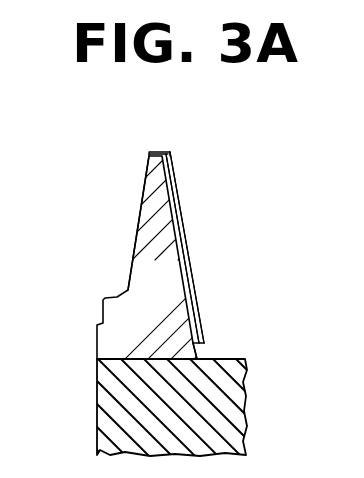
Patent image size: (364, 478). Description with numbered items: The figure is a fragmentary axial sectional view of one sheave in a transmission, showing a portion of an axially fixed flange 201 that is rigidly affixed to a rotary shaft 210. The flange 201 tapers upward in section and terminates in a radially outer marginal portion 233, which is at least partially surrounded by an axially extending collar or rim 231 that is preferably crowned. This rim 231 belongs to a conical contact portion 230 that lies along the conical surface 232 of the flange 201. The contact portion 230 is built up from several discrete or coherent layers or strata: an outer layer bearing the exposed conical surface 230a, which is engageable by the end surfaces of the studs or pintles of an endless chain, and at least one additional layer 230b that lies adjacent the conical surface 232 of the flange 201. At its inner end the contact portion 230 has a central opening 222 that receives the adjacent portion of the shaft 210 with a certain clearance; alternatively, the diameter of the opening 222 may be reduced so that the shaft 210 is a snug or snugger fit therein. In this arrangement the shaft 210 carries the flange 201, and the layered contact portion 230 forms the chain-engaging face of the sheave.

The axially fixed flange 201 is at (150, 192).
The rotary shaft 210 is at (112, 386).
The central opening 222 is at (205, 349).
The conical contact portion 230 is at (237, 168).
The exposed conical surface 230a is at (235, 213).
The additional layer 230b is at (232, 250).
The axially extending collar or rim 231 is at (166, 151).
The conical surface of the flange 232 is at (164, 251).
The radially outer marginal portion 233 is at (150, 168).